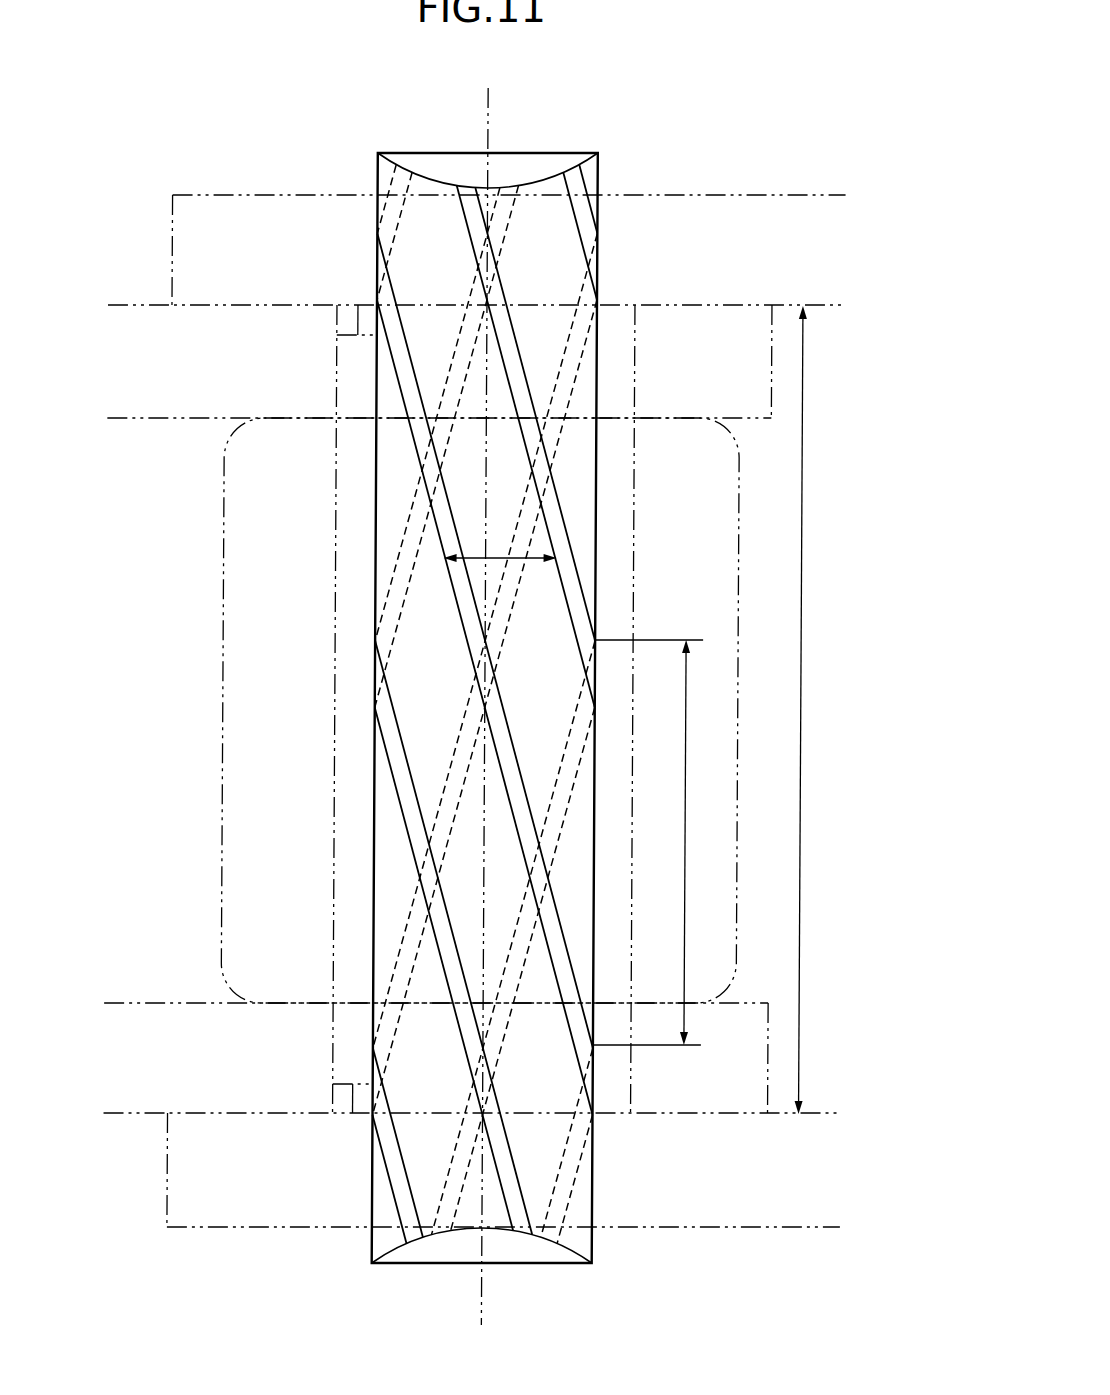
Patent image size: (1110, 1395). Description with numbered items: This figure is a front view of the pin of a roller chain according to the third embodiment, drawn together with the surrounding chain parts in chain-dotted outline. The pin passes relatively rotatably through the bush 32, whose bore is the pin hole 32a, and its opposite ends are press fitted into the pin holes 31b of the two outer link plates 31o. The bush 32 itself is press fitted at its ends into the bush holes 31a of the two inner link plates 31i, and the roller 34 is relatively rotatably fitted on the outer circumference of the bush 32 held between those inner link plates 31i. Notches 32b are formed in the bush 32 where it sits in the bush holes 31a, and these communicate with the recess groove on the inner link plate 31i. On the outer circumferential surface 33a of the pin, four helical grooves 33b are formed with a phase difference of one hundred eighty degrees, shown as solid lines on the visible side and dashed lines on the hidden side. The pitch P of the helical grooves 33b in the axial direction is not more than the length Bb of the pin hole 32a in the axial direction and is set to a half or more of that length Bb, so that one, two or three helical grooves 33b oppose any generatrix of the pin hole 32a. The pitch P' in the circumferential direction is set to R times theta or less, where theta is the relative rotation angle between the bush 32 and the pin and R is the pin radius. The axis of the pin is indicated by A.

The outer link plate 31o is at (652, 190).
The pin hole 31b is at (574, 268).
The bush hole 31a is at (338, 386).
The inner link plate 31i is at (207, 425).
The bush 32 is at (326, 605).
The pin hole of the bush 32a is at (375, 812).
The notch 32b is at (358, 318).
The outer circumferential surface 33a is at (566, 708).
The helical groove 33b is at (436, 537).
The roller 34 is at (225, 706).
The rotation axis A is at (489, 135).
The pitch in the axial direction P is at (648, 842).
The pitch in the circumferential direction P' is at (499, 587).
The length in the axial direction of the pin hole of the bush Bb is at (805, 710).